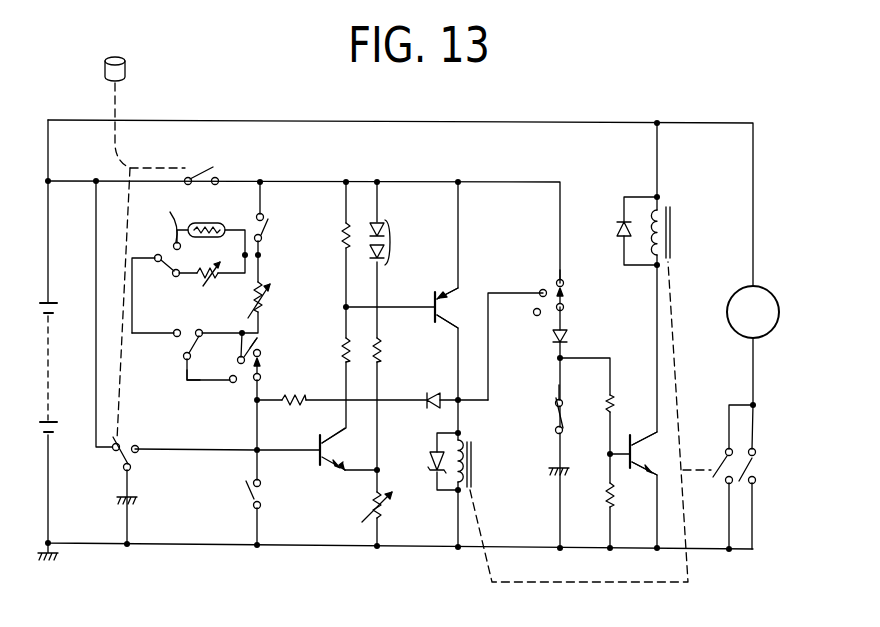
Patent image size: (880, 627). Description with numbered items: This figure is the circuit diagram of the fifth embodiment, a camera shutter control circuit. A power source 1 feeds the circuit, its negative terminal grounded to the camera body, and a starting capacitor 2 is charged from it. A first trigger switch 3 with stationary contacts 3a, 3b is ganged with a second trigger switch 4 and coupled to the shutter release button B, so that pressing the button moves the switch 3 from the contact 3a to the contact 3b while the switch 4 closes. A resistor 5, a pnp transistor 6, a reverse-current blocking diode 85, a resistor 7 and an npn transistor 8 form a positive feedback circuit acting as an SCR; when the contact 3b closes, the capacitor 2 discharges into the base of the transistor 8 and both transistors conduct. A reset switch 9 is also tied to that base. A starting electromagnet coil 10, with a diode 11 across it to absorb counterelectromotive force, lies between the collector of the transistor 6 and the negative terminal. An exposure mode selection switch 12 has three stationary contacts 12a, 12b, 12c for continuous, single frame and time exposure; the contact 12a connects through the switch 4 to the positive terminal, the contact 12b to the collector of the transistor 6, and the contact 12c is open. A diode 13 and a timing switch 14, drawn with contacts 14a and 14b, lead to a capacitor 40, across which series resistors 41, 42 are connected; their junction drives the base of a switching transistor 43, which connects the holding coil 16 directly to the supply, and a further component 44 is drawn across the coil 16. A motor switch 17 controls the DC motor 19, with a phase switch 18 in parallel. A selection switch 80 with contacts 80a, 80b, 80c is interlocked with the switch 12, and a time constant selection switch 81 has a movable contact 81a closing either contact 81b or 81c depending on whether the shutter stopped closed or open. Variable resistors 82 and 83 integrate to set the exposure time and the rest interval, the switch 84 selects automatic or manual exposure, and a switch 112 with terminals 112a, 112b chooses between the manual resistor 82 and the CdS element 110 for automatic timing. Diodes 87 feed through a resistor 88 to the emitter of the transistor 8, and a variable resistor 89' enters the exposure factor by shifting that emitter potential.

The shutter release button B is at (125, 70).
The power source 1 is at (50, 385).
The starting capacitor 2 is at (140, 502).
The first trigger switch 3 is at (120, 443).
The stationary contact 3a is at (123, 466).
The stationary contact 3b is at (137, 452).
The second trigger switch 4 is at (207, 170).
The resistor 5 is at (350, 352).
The pnp transistor 6 is at (447, 297).
The resistor 7 is at (293, 405).
The npn transistor 8 is at (329, 446).
The reset switch 9 is at (261, 492).
The starting electromagnet coil 10 is at (474, 450).
The diode 11 is at (428, 455).
The exposure mode selection switch 12 is at (564, 295).
The stationary contact 12a is at (562, 280).
The stationary contact 12b is at (542, 289).
The stationary contact 12c is at (534, 315).
The diode 13 is at (566, 332).
The timing switch 14 is at (563, 432).
The switch contact 14a is at (556, 410).
The stationary contact 14b is at (563, 400).
The holding electromagnet coil 16 is at (672, 218).
The motor switch 17 is at (721, 456).
The phase switch 18 is at (748, 465).
The DC motor 19 is at (737, 291).
The capacitor 40 is at (548, 470).
The resistor 41 is at (614, 395).
The resistor 42 is at (606, 495).
The switching transistor 43 is at (634, 447).
The diode 44 is at (622, 224).
The selection switch 80 is at (261, 378).
The stationary contact 80a is at (261, 353).
The stationary contact 80b is at (257, 338).
The stationary contact 80c is at (234, 383).
The time constant selection switch 81 is at (191, 356).
The movable contact 81a is at (174, 388).
The stationary contact 81b is at (205, 314).
The stationary contact 81c is at (174, 336).
The variable resistor 82 is at (208, 287).
The variable resistor 83 is at (265, 300).
The automatic-manual exposure mode selection switch 84 is at (268, 226).
The diode 85 is at (426, 396).
The diodes 87 is at (398, 242).
The resistor 88 is at (383, 357).
The variable resistor 89' is at (402, 512).
The lamp 110 is at (206, 221).
The switch 112 is at (157, 255).
The stationary terminal 112a is at (181, 262).
The stationary terminal 112b is at (157, 215).